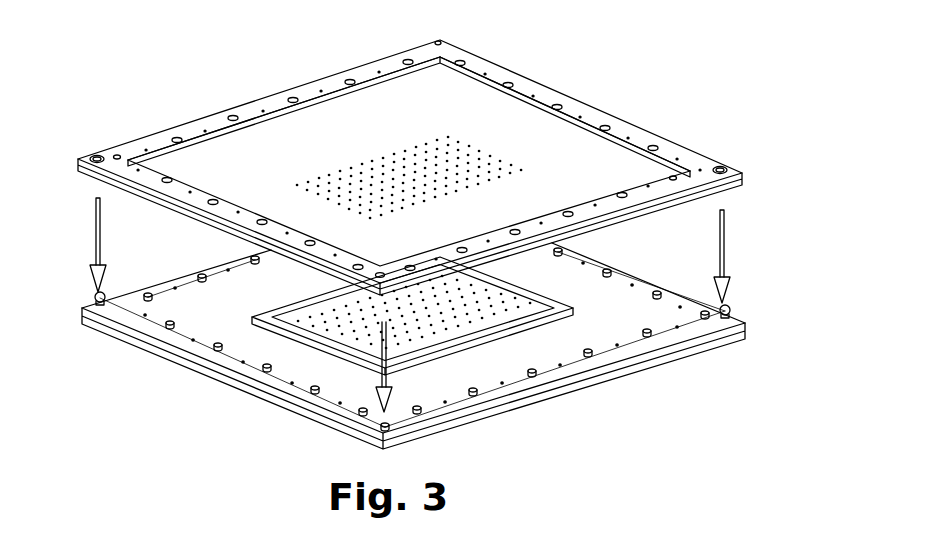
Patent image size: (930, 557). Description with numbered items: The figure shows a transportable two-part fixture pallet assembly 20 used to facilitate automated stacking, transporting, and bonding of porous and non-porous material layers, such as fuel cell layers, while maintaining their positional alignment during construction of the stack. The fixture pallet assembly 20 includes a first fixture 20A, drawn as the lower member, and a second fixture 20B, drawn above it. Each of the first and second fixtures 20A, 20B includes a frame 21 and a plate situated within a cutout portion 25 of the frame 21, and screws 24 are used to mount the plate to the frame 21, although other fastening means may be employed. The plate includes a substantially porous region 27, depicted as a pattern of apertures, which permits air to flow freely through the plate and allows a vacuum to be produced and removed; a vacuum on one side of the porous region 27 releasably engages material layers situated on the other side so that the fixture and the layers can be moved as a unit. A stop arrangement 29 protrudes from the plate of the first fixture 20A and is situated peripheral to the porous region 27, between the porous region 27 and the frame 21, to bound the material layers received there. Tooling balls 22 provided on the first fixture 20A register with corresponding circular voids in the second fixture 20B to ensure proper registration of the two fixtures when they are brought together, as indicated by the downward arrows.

The fixture pallet assembly 20 is at (647, 75).
The first fixture 20A is at (733, 333).
The second fixture 20B is at (697, 153).
The frame 21 is at (172, 128).
The tooling balls 22 is at (731, 306).
The screws 24 is at (150, 338).
The cutout portion 25 is at (318, 107).
The porous region 27 is at (453, 152).
The stop arrangement 29 is at (290, 337).